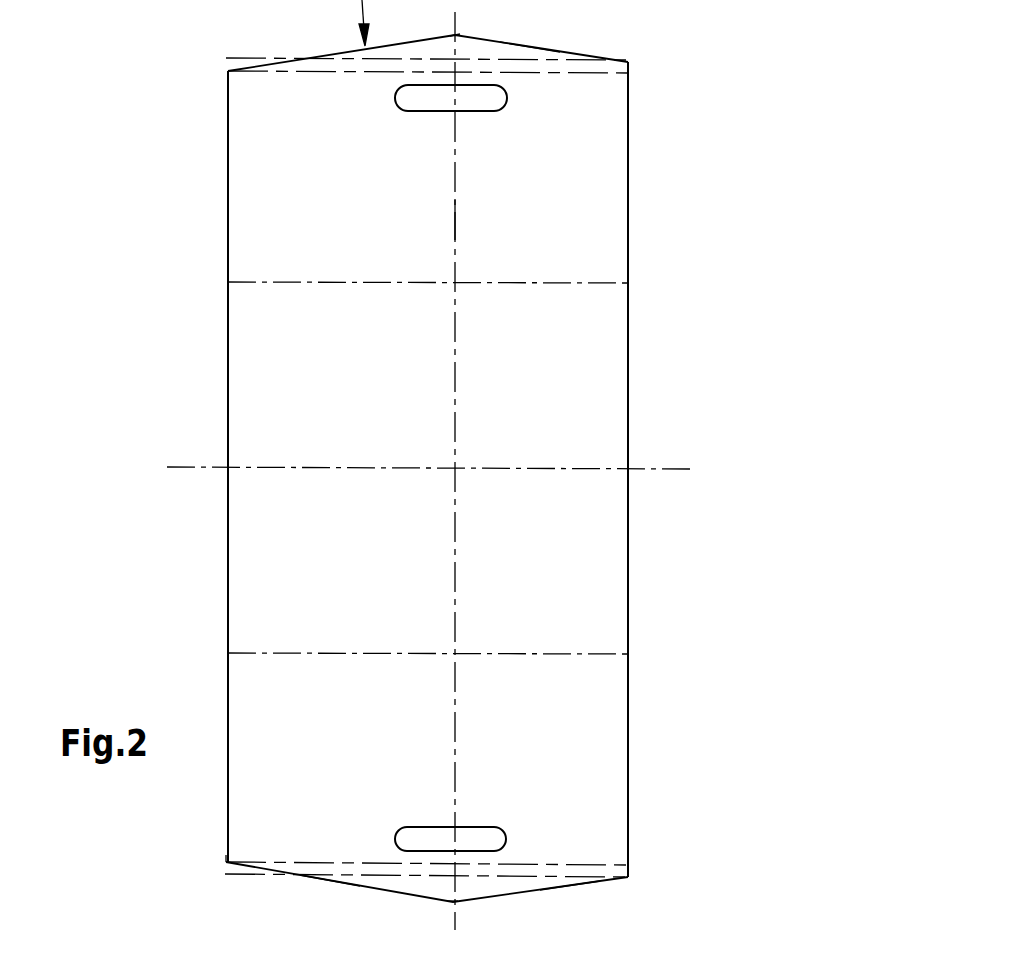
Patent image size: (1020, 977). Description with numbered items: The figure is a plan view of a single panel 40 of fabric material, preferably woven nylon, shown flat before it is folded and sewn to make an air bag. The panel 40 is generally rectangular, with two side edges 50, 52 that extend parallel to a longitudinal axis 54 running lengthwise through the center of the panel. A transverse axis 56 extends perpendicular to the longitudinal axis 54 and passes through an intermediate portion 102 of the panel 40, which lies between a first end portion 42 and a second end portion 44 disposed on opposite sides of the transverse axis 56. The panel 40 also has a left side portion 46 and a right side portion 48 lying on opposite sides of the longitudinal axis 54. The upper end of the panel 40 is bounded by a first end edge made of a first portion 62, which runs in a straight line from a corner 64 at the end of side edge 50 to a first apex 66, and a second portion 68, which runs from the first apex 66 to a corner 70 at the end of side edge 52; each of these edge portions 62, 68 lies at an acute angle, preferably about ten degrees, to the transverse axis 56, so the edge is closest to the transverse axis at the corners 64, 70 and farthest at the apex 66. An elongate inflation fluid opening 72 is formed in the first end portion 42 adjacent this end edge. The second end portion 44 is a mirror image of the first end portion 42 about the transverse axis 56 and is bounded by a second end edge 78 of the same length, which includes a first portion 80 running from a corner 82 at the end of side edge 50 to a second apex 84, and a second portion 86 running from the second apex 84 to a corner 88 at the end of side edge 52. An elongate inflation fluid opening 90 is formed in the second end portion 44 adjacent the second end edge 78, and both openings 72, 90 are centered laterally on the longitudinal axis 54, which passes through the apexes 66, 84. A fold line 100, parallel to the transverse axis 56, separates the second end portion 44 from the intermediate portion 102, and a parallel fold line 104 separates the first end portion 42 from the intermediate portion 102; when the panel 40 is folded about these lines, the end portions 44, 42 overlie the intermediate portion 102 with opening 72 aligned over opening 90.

The panel 40 is at (168, 151).
The first end portion 42 is at (368, 125).
The second end portion 44 is at (367, 804).
The left side portion 46 is at (285, 581).
The right side portion 48 is at (575, 448).
The side edge 50 is at (228, 412).
The side edge 52 is at (628, 390).
The longitudinal axis 54 is at (455, 213).
The transverse axis 56 is at (183, 467).
The first portion of first end edge 62 is at (330, 53).
The corner 64 is at (228, 71).
The first apex 66 is at (455, 35).
The second portion of first end edge 68 is at (530, 45).
The corner 70 is at (628, 62).
The inflation fluid opening 72 is at (485, 112).
The second end edge 78 is at (368, 888).
The first portion of second end edge 80 is at (330, 882).
The corner 82 is at (226, 862).
The second apex 84 is at (455, 903).
The second portion of second end edge 86 is at (563, 887).
The corner 88 is at (628, 877).
The inflation fluid opening 90 is at (470, 827).
The fold line 100 is at (515, 652).
The intermediate portion 102 is at (323, 434).
The fold line 104 is at (518, 285).